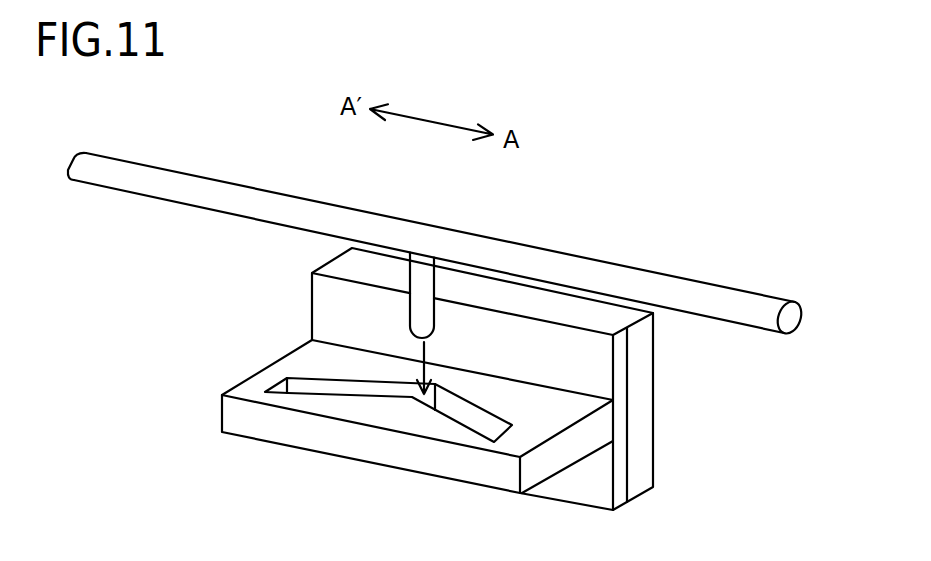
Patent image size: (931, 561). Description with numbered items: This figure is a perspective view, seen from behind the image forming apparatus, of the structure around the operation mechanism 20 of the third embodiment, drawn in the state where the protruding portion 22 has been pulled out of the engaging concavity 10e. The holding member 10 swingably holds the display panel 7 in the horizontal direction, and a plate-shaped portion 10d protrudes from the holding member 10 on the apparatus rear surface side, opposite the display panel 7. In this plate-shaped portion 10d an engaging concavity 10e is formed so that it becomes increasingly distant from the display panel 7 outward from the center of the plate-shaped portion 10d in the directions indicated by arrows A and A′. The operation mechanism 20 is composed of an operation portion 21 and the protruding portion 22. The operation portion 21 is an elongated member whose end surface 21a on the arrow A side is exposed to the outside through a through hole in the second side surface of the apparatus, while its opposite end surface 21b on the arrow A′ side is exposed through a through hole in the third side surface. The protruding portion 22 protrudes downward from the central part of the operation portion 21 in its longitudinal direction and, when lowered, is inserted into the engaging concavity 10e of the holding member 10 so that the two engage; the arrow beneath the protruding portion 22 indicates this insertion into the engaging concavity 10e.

The display panel 7 is at (641, 405).
The holding member 10 is at (618, 487).
The plate-shaped portion 10d is at (301, 433).
The engaging concavity 10e is at (468, 420).
The operation mechanism 20 is at (587, 225).
The operation portion 21 is at (468, 253).
The end surface 21a is at (790, 318).
The end surface 21b is at (65, 168).
The protruding portion 22 is at (424, 278).